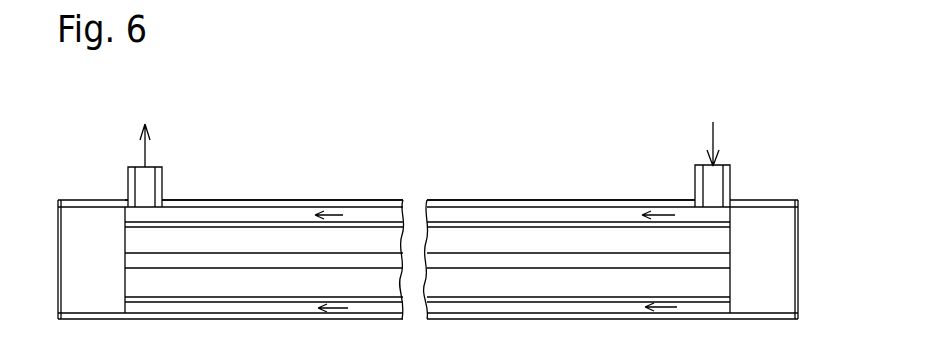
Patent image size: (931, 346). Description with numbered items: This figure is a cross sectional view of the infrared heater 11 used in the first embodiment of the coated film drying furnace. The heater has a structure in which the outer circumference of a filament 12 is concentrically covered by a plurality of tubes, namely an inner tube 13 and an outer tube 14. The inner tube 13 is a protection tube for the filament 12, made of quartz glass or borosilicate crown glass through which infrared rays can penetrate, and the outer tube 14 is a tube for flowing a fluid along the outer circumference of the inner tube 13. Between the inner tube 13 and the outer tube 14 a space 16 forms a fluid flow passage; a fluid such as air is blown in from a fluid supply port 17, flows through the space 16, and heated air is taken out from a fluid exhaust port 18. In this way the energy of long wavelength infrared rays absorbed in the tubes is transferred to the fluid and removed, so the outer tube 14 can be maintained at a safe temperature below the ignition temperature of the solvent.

The infrared heater 11 is at (308, 180).
The filament 12 is at (458, 260).
The inner tube 13 is at (510, 223).
The outer tube 14 is at (553, 202).
The space 16 is at (605, 213).
The fluid supply port 17 is at (721, 180).
The fluid exhaust port 18 is at (152, 178).